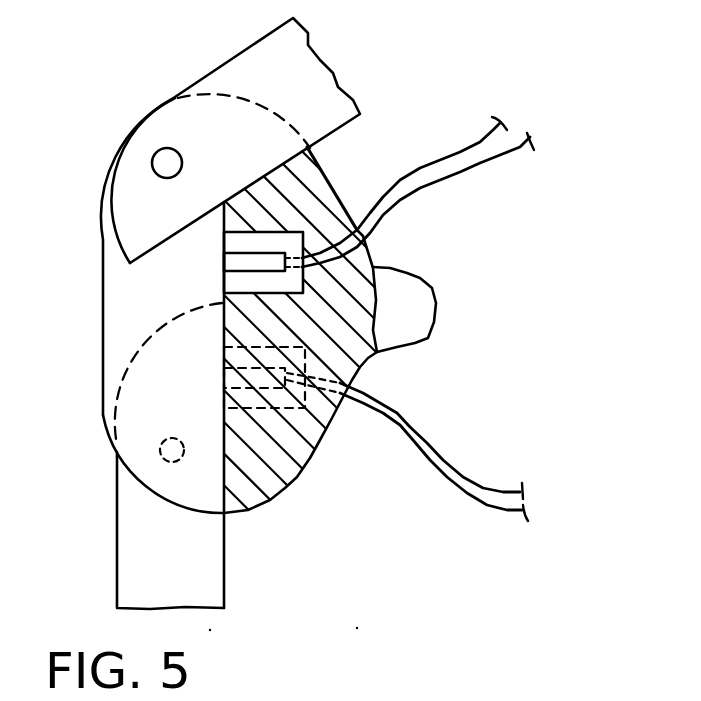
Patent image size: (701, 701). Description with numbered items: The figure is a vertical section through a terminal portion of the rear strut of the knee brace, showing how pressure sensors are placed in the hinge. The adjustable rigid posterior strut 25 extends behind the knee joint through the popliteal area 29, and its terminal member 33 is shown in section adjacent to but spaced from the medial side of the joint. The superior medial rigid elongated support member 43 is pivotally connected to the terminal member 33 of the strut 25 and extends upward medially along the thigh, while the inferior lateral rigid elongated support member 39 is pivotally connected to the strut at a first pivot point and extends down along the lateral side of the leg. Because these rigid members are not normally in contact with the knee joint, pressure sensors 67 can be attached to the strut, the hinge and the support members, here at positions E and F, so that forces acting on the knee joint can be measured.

The superior medial rigid elongated support member 43 is at (250, 68).
The inferior lateral rigid elongated support member 39 is at (127, 558).
The terminal member 33 is at (317, 183).
The adjustable rigid posterior strut 25 is at (302, 497).
The popliteal area 29 is at (403, 273).
The pressure sensors 67 is at (224, 253).
The position E is at (223, 270).
The position F is at (223, 381).